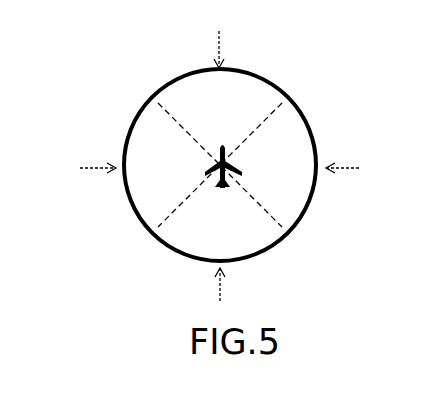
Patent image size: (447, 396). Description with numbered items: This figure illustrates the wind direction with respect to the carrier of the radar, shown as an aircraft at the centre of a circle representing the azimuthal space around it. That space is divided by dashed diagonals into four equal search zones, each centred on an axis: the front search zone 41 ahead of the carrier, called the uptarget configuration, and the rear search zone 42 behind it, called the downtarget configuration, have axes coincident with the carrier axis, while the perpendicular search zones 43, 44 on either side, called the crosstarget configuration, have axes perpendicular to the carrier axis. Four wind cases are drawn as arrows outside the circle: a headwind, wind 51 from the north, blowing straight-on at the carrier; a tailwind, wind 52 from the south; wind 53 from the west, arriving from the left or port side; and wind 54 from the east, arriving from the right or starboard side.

The search zone 41 is at (262, 98).
The search zone 42 is at (180, 240).
The search zone 43 is at (145, 133).
The search zone 44 is at (298, 138).
The wind 51 is at (212, 46).
The wind 52 is at (223, 290).
The wind 53 is at (95, 172).
The wind 54 is at (345, 170).